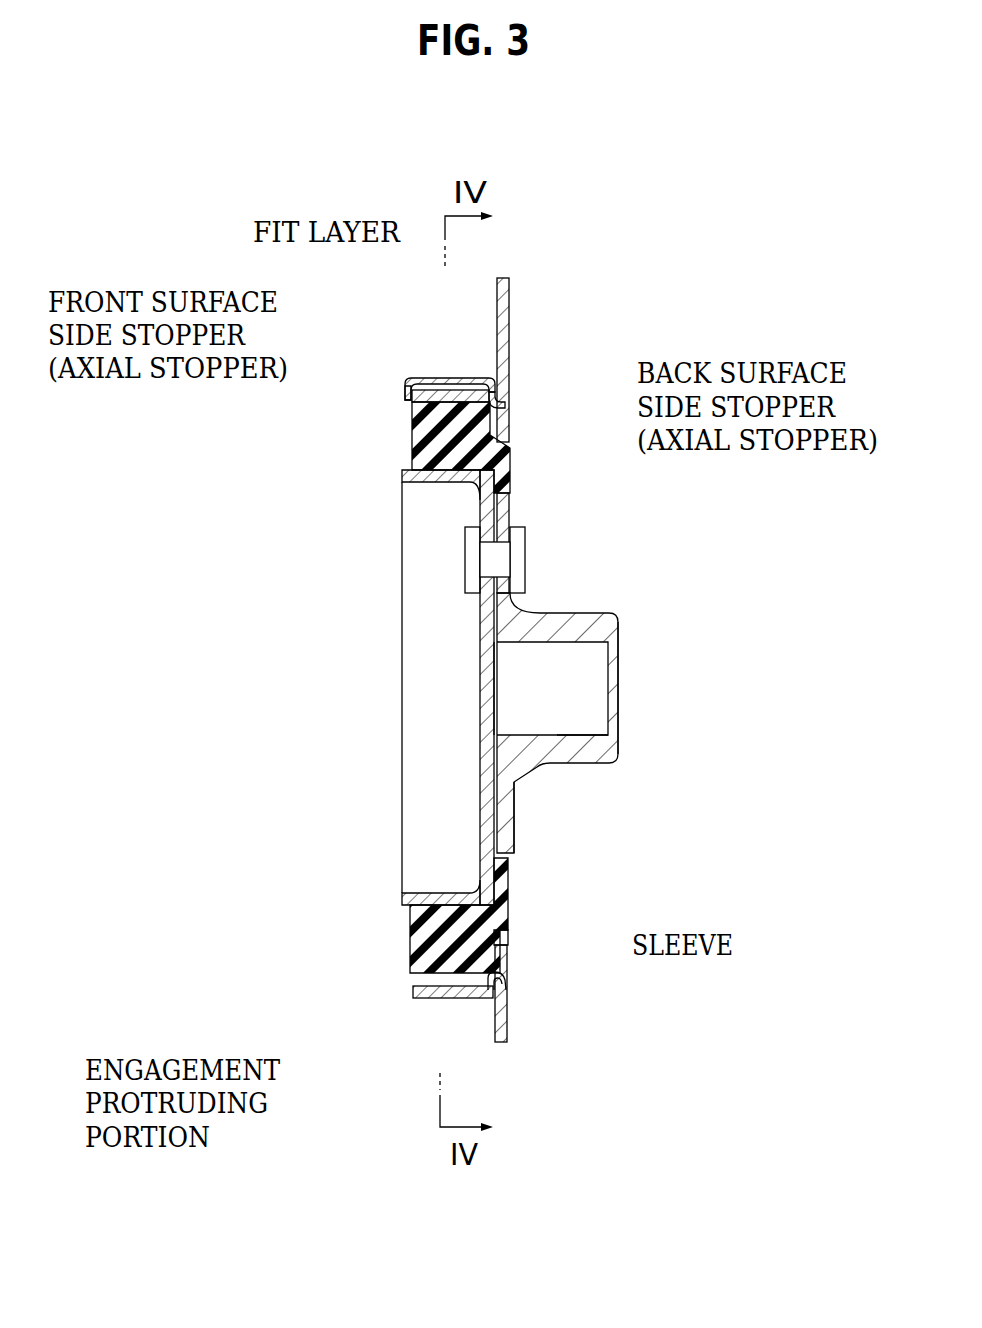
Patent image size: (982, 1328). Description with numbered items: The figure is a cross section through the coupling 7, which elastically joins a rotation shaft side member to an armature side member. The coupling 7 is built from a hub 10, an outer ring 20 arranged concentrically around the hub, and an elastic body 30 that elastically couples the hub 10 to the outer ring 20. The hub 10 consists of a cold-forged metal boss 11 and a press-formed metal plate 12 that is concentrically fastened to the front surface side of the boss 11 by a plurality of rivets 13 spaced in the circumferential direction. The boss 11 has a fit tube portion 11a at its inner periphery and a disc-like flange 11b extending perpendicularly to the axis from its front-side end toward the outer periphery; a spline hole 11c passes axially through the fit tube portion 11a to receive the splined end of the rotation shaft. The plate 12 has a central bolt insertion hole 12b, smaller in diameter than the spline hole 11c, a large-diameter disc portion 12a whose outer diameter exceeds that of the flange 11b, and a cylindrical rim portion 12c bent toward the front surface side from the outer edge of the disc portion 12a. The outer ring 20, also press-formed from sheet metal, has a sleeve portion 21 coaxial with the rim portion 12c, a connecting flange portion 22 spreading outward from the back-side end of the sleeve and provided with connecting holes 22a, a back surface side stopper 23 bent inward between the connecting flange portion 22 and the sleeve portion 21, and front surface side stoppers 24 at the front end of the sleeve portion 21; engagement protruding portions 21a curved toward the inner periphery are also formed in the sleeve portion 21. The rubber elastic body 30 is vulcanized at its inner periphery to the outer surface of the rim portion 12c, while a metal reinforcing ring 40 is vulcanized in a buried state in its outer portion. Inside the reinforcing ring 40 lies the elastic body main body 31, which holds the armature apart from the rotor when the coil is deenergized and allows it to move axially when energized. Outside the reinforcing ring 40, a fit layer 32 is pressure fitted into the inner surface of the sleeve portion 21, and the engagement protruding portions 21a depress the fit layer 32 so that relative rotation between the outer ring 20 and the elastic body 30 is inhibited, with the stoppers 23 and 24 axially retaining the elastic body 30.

The coupling 7 is at (252, 686).
The hub 10 is at (458, 602).
The boss 11 is at (548, 775).
The fit tube portion 11a is at (580, 752).
The flange 11b is at (513, 835).
The spline hole 11c is at (557, 738).
The plate 12 is at (465, 815).
The disc portion 12a is at (480, 773).
The bolt insertion hole 12b is at (487, 690).
The rim portion 12c is at (446, 481).
The rivets 13 is at (520, 553).
The outer ring 20 is at (519, 361).
The sleeve portion 21 is at (460, 377).
The engagement protruding portions 21a is at (440, 1000).
The connecting flange portion 22 is at (506, 1015).
The connecting holes 22a is at (508, 318).
The back surface side stopper 23 is at (507, 413).
The front surface side stoppers 24 is at (404, 391).
The elastic body 30 is at (404, 936).
The elastic body main body 31 is at (443, 437).
The fit layer 32 is at (430, 392).
The reinforcing ring 40 is at (508, 950).